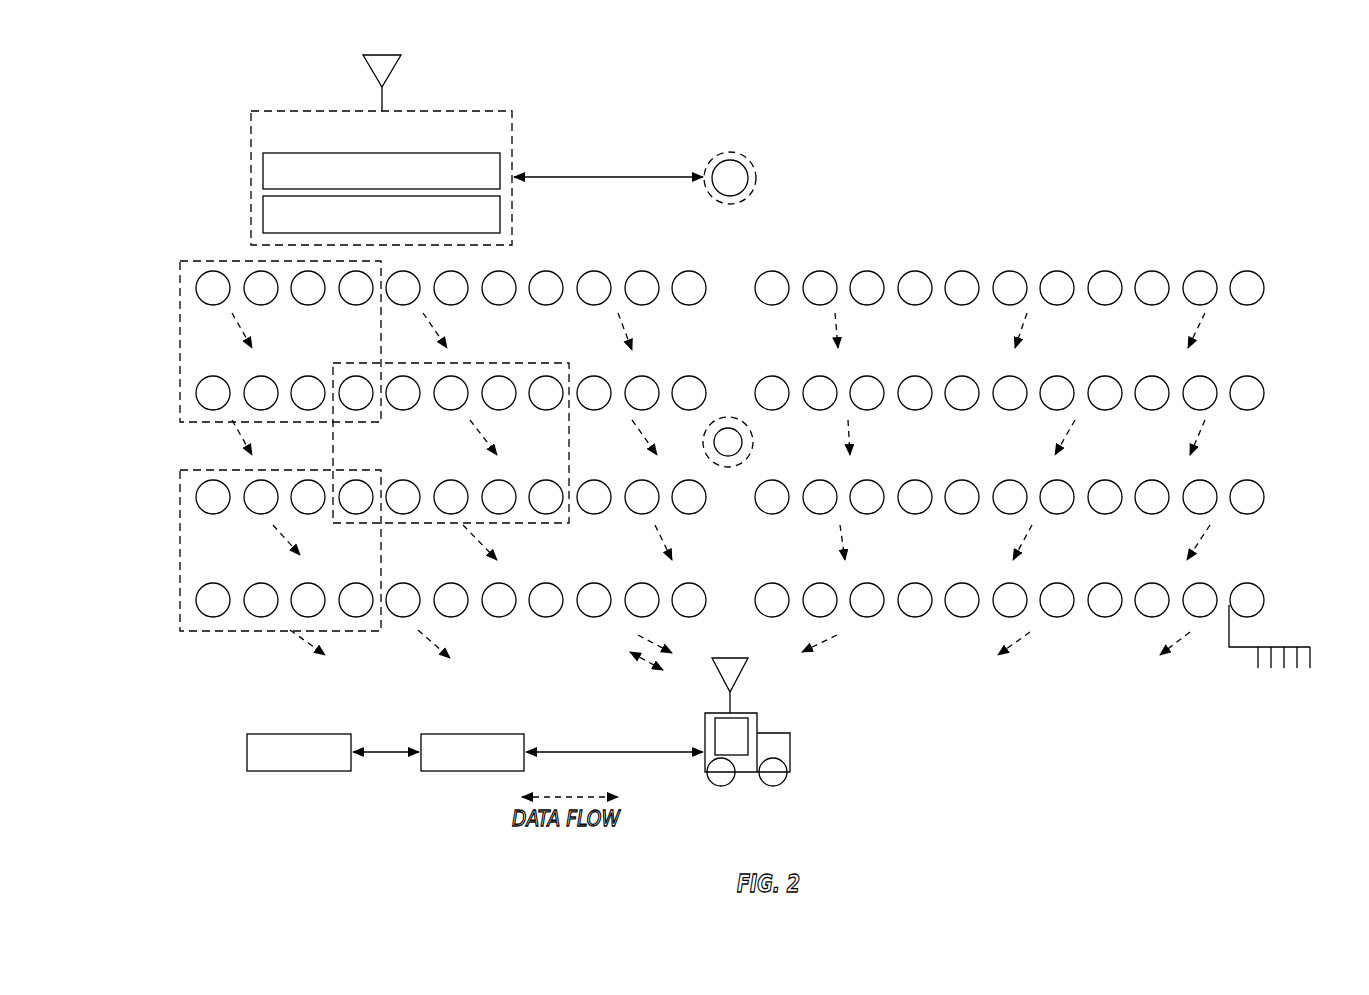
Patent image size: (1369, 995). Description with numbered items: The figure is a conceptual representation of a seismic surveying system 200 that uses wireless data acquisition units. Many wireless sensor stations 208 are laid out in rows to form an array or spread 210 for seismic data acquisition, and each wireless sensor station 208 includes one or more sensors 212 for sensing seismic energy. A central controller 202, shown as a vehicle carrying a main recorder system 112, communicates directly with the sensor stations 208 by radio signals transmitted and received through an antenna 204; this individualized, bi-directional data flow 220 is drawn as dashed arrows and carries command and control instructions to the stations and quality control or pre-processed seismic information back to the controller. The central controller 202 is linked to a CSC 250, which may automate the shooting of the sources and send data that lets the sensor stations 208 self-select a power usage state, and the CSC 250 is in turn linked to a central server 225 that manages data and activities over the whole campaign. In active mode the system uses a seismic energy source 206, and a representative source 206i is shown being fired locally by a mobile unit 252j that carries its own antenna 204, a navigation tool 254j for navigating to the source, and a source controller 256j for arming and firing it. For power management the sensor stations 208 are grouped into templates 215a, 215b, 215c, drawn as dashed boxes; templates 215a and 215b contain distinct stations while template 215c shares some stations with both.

The seismic surveying system 200 is at (1020, 718).
The central controller 202 is at (790, 750).
The antenna 204 is at (394, 72).
The seismic energy source 206 is at (757, 433).
The seismic source 206i is at (734, 152).
The wireless sensor station 208 is at (1247, 305).
The array (spread) 210 is at (1110, 252).
The sensor 212 is at (1310, 658).
The template 215a is at (180, 518).
The template 215b is at (180, 338).
The template 215c is at (530, 363).
The data flow 220 is at (1063, 680).
The central server 225 is at (258, 734).
The CSC 250 is at (447, 734).
The mobile unit 252j is at (513, 136).
The navigation tool 254j is at (263, 160).
The source controller 256j is at (263, 206).
The main recorder system 112 is at (720, 728).